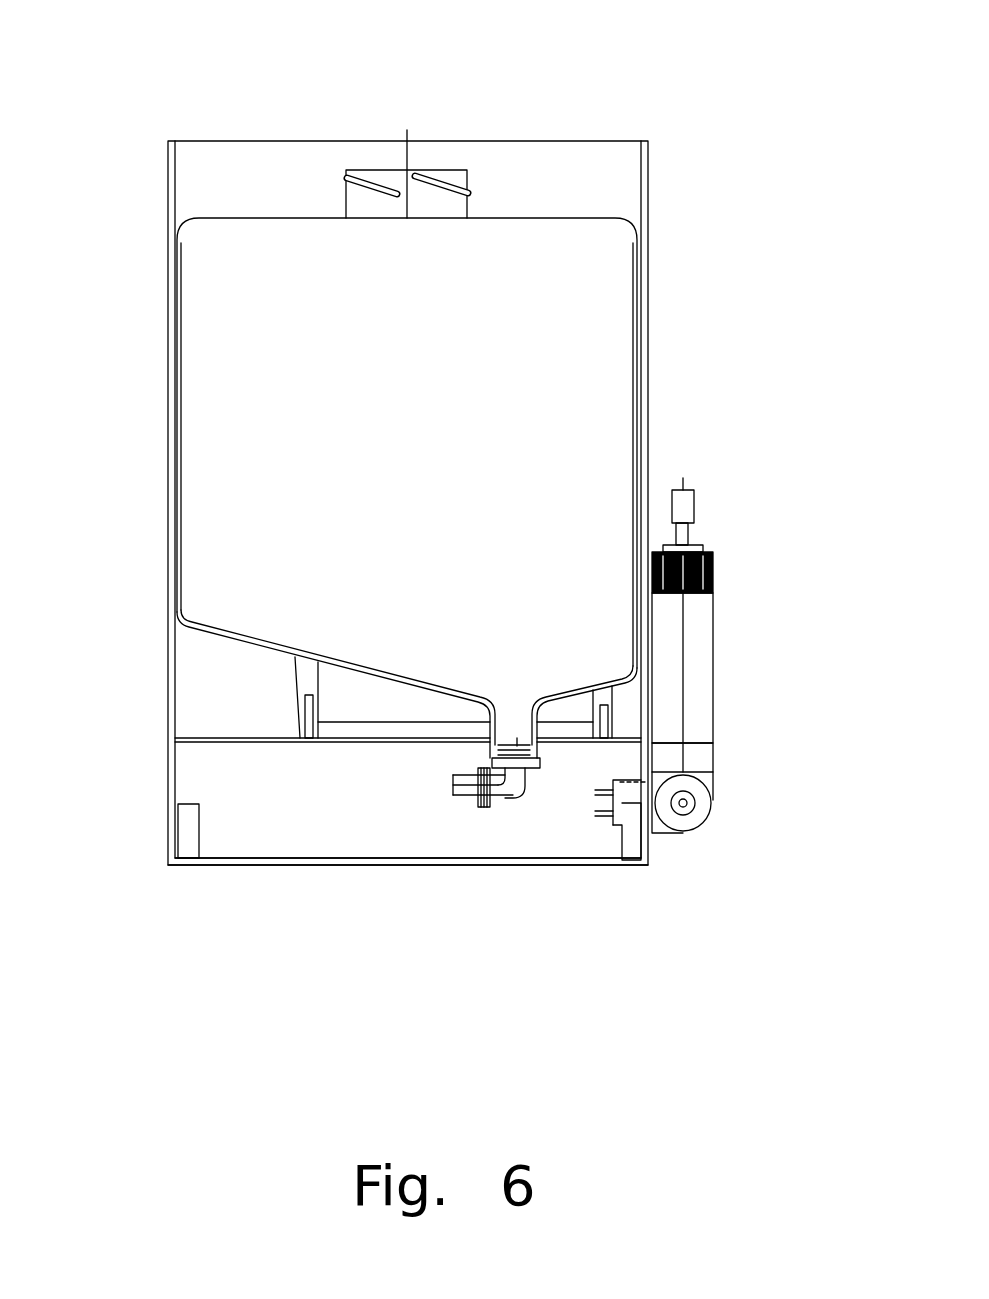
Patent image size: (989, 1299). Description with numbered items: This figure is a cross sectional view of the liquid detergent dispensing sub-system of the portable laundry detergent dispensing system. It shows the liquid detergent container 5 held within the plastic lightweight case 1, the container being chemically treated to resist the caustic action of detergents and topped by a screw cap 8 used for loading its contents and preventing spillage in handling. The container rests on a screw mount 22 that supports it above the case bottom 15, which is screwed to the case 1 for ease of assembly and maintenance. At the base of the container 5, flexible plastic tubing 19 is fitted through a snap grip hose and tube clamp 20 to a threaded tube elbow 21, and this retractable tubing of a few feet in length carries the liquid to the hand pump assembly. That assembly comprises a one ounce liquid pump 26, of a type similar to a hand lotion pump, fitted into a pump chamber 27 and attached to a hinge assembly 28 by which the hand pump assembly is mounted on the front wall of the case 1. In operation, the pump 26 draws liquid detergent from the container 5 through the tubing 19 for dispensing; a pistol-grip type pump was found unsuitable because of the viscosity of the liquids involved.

The case 1 is at (664, 169).
The liquid detergent container 5 is at (519, 197).
The screw cap 8 is at (330, 142).
The case bottom 15 is at (197, 888).
The flexible plastic tubing 19 is at (438, 814).
The snap grip hose and tube clamp 20 is at (476, 826).
The threaded tube elbow 21 is at (509, 822).
The screw mount 22 is at (290, 762).
The liquid pump 26 is at (707, 471).
The pump chamber 27 is at (714, 667).
The hinge assembly 28 is at (726, 753).